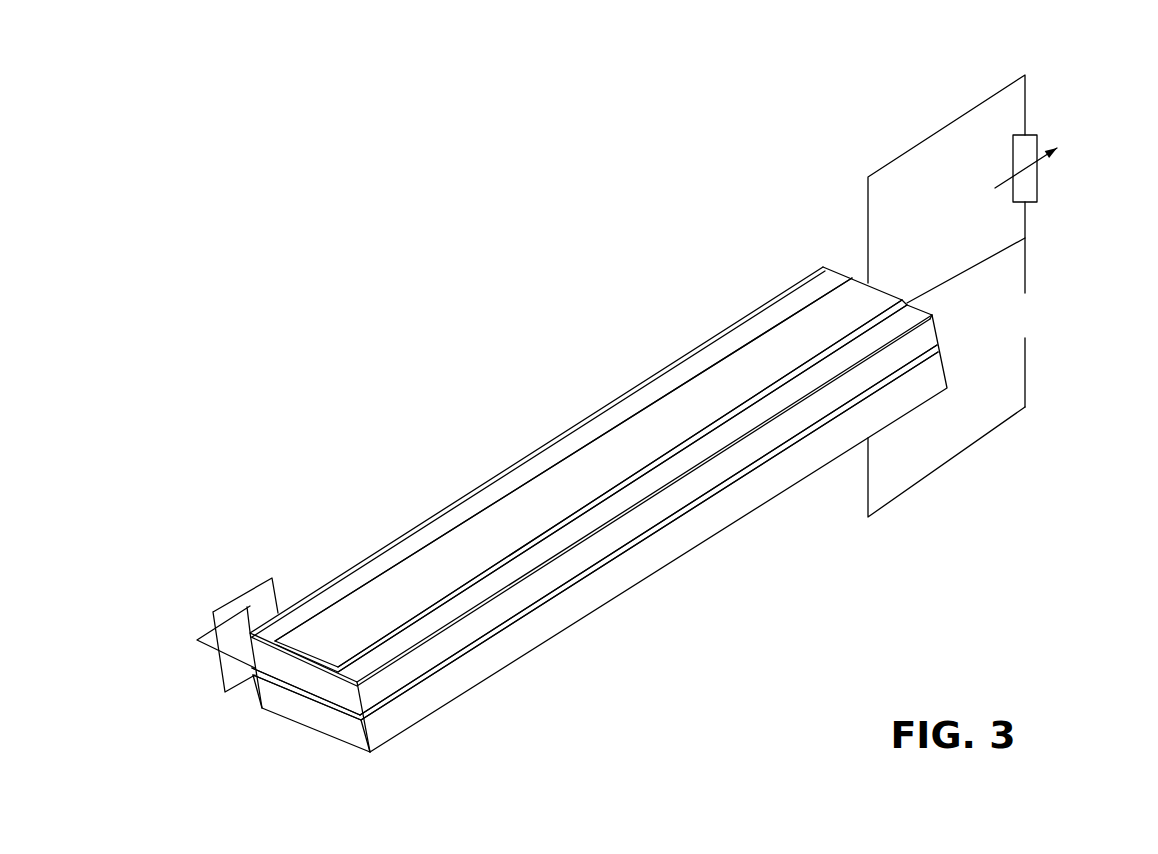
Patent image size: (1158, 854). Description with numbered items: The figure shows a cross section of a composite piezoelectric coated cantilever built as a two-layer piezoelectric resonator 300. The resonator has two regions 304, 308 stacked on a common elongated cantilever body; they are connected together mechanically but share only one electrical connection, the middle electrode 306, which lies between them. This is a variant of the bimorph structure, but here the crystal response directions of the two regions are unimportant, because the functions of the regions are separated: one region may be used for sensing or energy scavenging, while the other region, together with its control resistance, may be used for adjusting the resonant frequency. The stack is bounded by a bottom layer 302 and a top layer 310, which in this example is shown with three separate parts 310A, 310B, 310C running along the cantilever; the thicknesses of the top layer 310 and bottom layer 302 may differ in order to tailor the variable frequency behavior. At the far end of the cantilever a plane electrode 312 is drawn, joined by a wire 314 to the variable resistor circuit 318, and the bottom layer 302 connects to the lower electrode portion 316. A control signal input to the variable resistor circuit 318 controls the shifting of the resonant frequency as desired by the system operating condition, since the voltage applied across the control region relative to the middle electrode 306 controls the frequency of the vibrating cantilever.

The two-layer piezoelectric resonator 300 is at (408, 207).
The bottom layer 302 is at (497, 673).
The region of the resonator 304 is at (557, 612).
The middle electrode 306 is at (628, 548).
The region of the resonator 308 is at (677, 492).
The top layer 310 is at (517, 497).
The first part of top layer 310A is at (635, 407).
The second part of top layer 310B is at (695, 413).
The third part of top layer 310C is at (742, 422).
The electrode plane 312 is at (982, 102).
The wire 314 is at (968, 272).
The connection of the bottom layer 316 is at (925, 478).
The variable resistor circuit 318 is at (1030, 147).